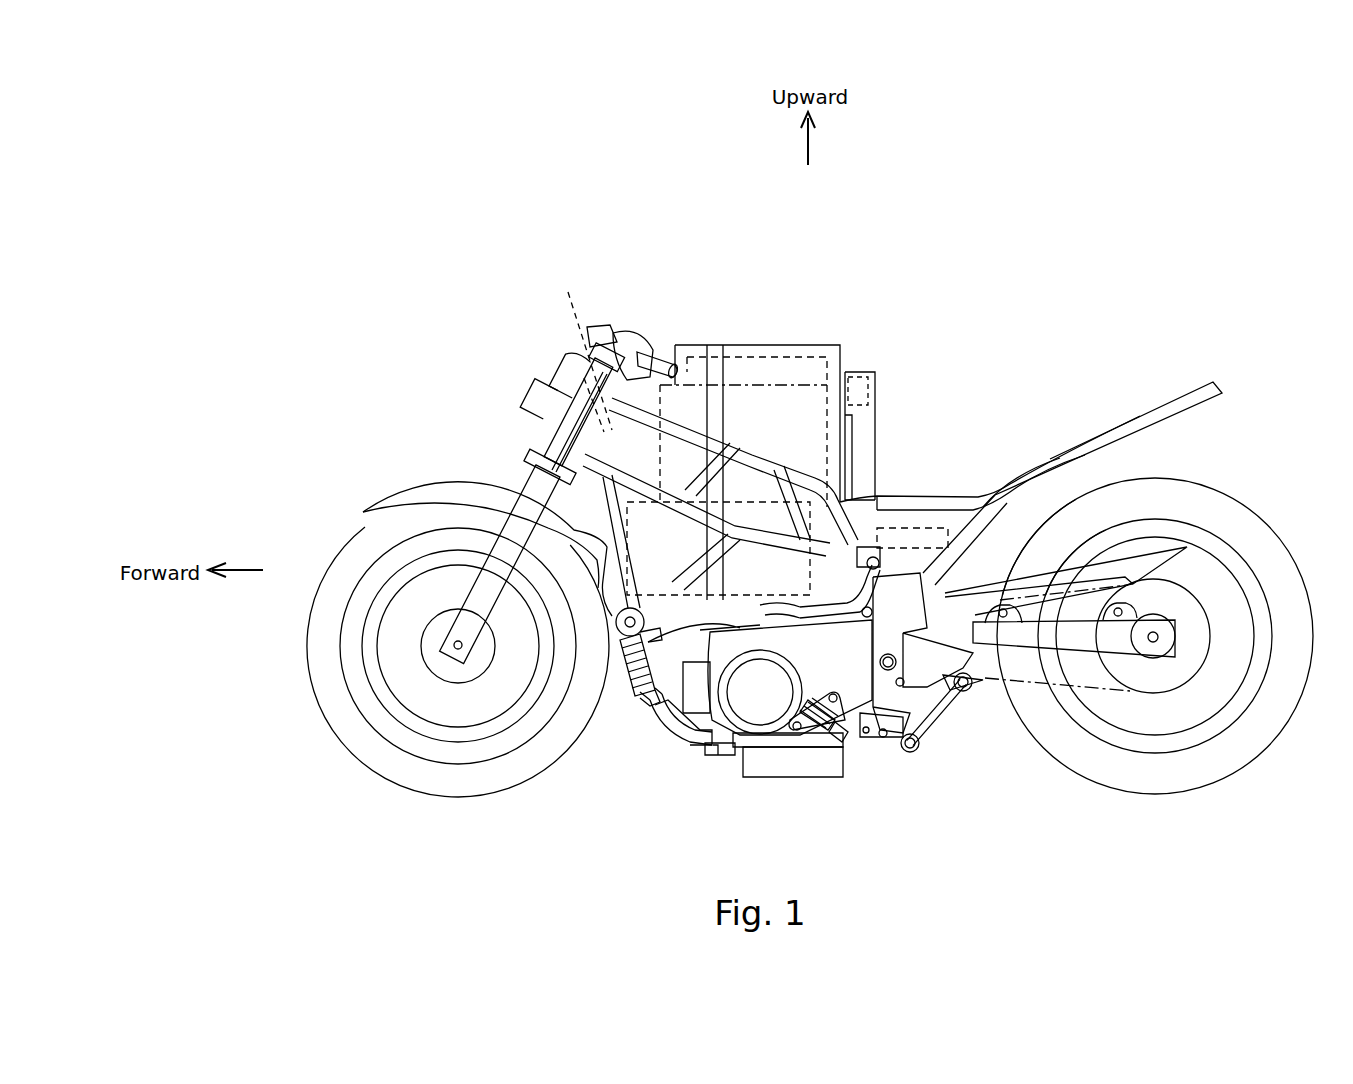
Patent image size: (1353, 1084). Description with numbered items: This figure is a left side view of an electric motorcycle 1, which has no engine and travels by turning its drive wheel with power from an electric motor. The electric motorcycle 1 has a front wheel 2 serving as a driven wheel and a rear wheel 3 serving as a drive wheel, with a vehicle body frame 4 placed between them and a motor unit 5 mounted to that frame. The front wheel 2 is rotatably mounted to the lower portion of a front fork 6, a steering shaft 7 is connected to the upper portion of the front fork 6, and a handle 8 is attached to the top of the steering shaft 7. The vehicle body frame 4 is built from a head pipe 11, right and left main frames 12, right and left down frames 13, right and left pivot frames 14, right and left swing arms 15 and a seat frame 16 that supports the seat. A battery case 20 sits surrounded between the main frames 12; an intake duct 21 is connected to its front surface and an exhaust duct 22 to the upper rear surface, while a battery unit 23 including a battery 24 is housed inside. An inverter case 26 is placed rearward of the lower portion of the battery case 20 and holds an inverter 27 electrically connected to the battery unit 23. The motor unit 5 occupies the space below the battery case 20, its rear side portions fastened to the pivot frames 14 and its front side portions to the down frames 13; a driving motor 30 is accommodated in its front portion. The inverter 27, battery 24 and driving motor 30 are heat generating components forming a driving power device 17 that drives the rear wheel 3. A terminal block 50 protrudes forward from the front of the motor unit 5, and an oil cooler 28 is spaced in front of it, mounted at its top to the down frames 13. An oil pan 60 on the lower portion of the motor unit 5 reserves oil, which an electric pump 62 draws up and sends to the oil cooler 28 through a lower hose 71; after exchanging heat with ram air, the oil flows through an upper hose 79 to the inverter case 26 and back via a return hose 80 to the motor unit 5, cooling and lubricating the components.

The electric motorcycle 1 is at (1164, 271).
The front wheel 2 is at (375, 748).
The rear wheel 3 is at (1240, 752).
The vehicle body frame 4 is at (1157, 405).
The motor unit 5 is at (832, 785).
The front fork 6 is at (528, 510).
The steering shaft 7 is at (580, 346).
The handle 8 is at (657, 345).
The head pipe 11 is at (580, 405).
The main frames 12 is at (752, 430).
The down frames 13 is at (670, 745).
The pivot frames 14 is at (892, 688).
The swing arms 15 is at (1012, 655).
The seat frame 16 is at (1100, 440).
The driving power device 17 is at (748, 710).
The battery case 20 is at (878, 390).
The intake duct 21 is at (548, 418).
The exhaust duct 22 is at (866, 398).
The battery unit 23 is at (862, 430).
The battery 24 is at (840, 352).
The inverter case 26 is at (1020, 540).
The inverter 27 is at (945, 540).
The oil cooler 28 is at (640, 692).
The driving motor 30 is at (770, 712).
The terminal block 50 is at (700, 706).
The oil pan 60 is at (800, 768).
The electric pump 62 is at (824, 738).
The lower hose 71 is at (688, 755).
The upper hose 79 is at (765, 605).
The return hose 80 is at (800, 620).